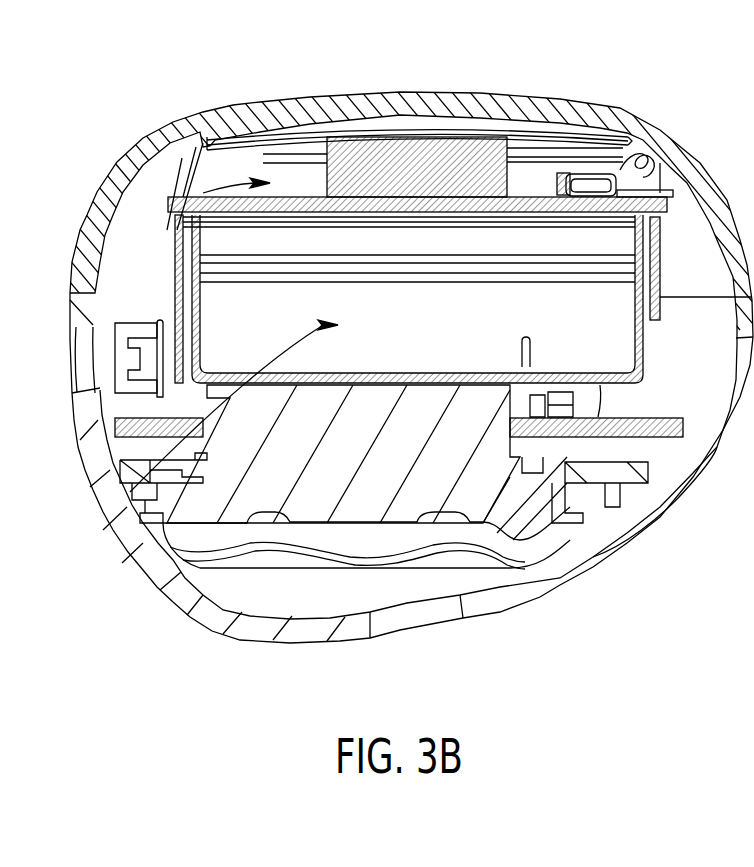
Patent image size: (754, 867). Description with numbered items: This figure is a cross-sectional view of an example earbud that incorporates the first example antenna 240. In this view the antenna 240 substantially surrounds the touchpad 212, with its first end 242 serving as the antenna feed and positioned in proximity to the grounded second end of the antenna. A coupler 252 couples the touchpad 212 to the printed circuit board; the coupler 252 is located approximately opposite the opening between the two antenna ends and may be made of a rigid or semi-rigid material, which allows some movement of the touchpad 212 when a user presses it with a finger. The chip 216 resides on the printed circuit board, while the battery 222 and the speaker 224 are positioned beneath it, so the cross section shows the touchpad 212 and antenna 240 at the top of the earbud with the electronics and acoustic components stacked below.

The touchpad 212 is at (233, 106).
The chip 216 is at (370, 183).
The battery 222 is at (308, 468).
The speaker 224 is at (140, 578).
The first example antenna 240 is at (250, 137).
The first end 242 is at (540, 184).
The coupler 252 is at (172, 178).